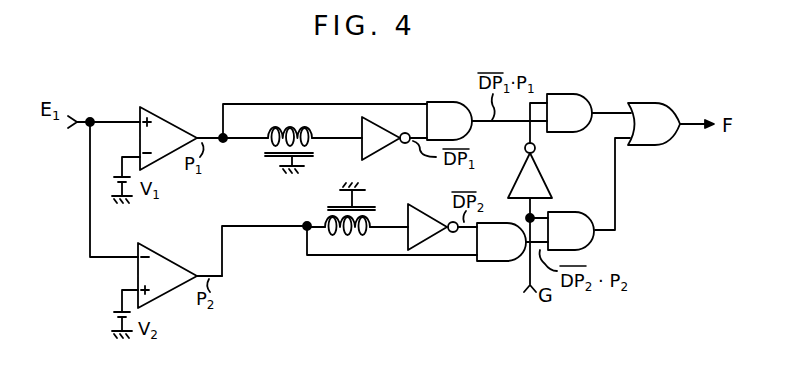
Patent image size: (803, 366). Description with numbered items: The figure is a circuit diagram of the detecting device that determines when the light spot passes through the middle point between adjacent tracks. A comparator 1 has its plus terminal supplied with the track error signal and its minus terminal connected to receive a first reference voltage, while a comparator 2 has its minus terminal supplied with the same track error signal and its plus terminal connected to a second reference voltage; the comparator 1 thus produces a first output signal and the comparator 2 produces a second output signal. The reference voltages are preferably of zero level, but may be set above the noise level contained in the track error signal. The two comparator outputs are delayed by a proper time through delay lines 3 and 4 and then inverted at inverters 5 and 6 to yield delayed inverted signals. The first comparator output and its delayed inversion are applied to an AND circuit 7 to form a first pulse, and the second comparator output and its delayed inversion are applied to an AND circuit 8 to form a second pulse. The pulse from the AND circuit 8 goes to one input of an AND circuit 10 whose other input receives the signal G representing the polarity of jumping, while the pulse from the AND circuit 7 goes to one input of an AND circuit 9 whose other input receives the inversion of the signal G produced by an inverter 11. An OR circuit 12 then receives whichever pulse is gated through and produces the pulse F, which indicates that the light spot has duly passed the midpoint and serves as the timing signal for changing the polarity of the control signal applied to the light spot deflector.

The comparator 1 is at (155, 112).
The comparator 2 is at (165, 250).
The delay line 3 is at (267, 152).
The delay line 4 is at (372, 203).
The inverter 5 is at (378, 131).
The inverter 6 is at (422, 215).
The AND circuit 7 is at (447, 102).
The AND circuit 8 is at (482, 223).
The AND circuit 9 is at (577, 95).
The AND circuit 10 is at (565, 213).
The inverter 11 is at (536, 168).
The OR circuit 12 is at (665, 107).